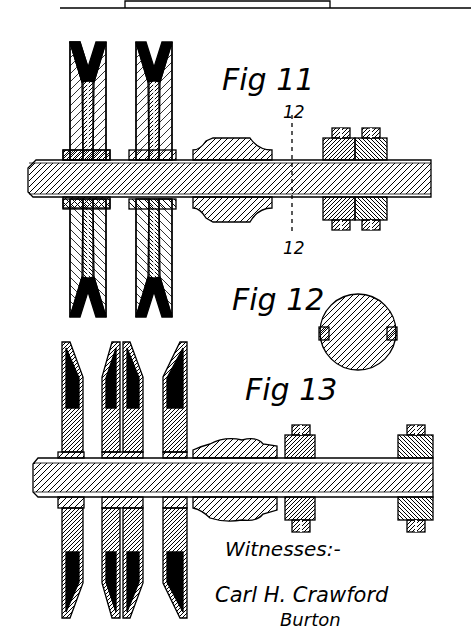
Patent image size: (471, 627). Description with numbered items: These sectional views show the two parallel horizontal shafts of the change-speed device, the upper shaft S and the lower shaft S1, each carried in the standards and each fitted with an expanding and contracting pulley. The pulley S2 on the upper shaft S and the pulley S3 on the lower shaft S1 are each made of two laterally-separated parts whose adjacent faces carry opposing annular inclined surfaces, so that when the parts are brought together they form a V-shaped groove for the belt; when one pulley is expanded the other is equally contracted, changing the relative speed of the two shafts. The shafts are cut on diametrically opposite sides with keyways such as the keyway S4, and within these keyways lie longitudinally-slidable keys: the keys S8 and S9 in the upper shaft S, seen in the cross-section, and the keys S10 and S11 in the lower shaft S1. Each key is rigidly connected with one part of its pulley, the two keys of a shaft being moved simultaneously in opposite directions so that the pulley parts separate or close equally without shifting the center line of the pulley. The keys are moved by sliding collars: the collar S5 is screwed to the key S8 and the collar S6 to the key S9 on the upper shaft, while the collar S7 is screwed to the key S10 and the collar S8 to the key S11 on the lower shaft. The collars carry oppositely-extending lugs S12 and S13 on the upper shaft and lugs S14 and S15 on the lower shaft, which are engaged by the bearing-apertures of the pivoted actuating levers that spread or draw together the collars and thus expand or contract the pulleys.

In FIG. 11, the shaft S is at (432, 162).
In FIG. 11, the shaft S1 is at (105, 43).
In FIG. 13, the shaft S1 is at (436, 462).
In FIG. 11, the pulley S2 is at (68, 82).
In FIG. 13, the pulley S2 is at (66, 341).
In FIG. 13, the pulley S3 is at (62, 376).
In FIG. 11, the keyway S4 is at (50, 158).
In FIG. 11, the collar S5 is at (60, 210).
In FIG. 11, the collar S6 is at (380, 140).
In FIG. 13, the collar S6 is at (57, 455).
In FIG. 13, the collar S7 is at (58, 507).
In FIG. 11, the key S8 is at (186, 158).
In FIG. 12, the key S8 is at (319, 333).
In FIG. 13, the key S8 is at (432, 438).
In FIG. 11, the key S9 is at (186, 204).
In FIG. 12, the key S9 is at (397, 333).
In FIG. 13, the key S10 is at (196, 448).
In FIG. 13, the key S11 is at (208, 508).
In FIG. 11, the lug S12 is at (341, 128).
In FIG. 11, the lug S13 is at (372, 128).
In FIG. 13, the lug S14 is at (312, 420).
In FIG. 13, the lug S15 is at (416, 425).